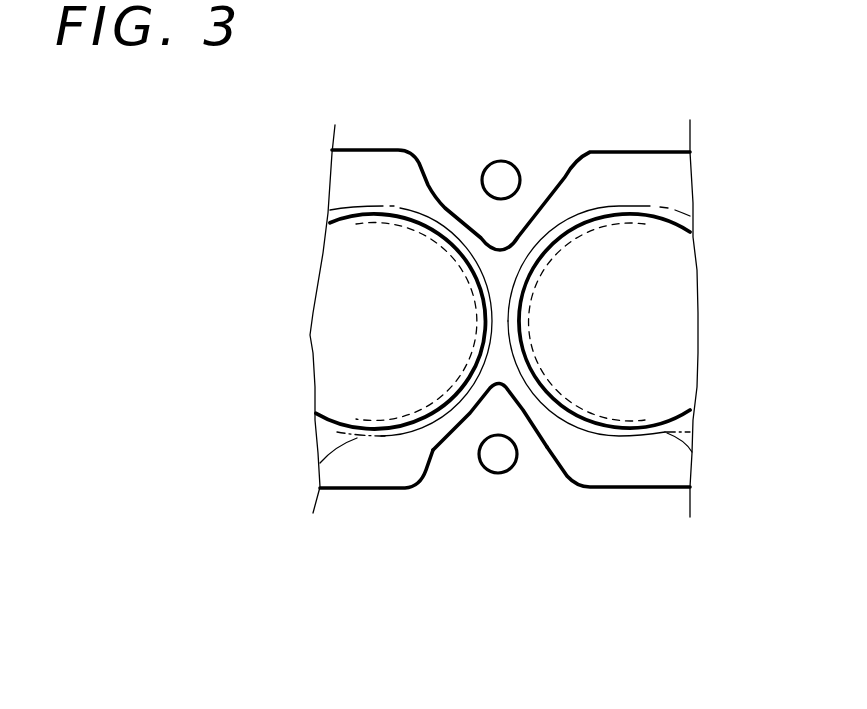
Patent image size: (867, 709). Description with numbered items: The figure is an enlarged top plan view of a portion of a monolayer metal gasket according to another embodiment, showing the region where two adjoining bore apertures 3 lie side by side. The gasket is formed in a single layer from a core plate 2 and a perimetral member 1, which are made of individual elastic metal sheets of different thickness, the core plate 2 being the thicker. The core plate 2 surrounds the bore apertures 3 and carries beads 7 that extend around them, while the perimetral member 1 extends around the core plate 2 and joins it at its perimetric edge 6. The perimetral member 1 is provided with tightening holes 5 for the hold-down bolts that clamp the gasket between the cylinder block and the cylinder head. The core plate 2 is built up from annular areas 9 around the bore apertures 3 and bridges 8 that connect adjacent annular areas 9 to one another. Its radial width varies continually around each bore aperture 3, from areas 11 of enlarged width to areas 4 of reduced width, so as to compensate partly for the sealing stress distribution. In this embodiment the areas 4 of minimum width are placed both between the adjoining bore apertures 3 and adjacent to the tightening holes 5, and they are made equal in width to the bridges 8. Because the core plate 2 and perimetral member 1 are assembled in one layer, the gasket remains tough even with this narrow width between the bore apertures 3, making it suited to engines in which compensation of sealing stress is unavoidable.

The perimetral member 1 is at (557, 172).
The core plate 2 is at (667, 192).
The bore aperture 3 is at (345, 218).
The area of reduced width 4 is at (458, 245).
The tightening hole 5 is at (504, 172).
The perimetric edge 6 is at (616, 490).
The bead 7 is at (322, 458).
The bridge 8 is at (502, 332).
The annular area 9 is at (386, 172).
The area of enlarged width 11 is at (358, 472).